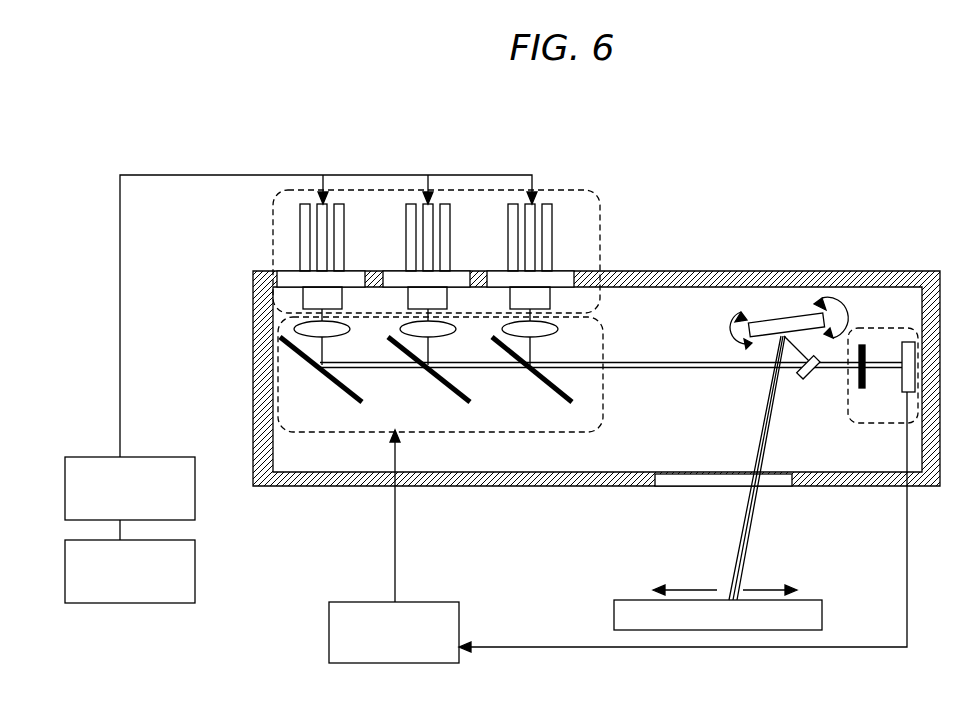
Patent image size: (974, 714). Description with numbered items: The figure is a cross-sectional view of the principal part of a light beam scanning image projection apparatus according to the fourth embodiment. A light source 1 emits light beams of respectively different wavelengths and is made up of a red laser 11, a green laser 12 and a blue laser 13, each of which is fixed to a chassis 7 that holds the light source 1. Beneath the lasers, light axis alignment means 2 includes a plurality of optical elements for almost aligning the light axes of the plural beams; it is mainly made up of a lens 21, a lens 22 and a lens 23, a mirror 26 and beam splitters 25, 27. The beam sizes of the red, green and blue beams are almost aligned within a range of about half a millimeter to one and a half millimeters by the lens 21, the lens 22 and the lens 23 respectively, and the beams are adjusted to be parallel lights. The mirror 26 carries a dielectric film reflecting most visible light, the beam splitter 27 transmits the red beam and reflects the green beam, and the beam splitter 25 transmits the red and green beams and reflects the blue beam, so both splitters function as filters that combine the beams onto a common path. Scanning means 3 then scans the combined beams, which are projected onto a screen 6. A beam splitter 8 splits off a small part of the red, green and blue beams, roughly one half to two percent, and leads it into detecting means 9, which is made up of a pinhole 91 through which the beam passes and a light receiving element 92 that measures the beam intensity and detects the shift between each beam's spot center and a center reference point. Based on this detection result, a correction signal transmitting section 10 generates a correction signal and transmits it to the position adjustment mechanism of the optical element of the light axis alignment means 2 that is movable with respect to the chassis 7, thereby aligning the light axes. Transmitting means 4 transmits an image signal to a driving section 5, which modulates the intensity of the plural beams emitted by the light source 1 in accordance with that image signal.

The light source 1 is at (594, 195).
The red laser 11 is at (302, 275).
The green laser 12 is at (403, 275).
The blue laser 13 is at (568, 273).
The light axis alignment means 2 is at (579, 433).
The lens 21 is at (329, 333).
The lens 22 is at (446, 324).
The lens 23 is at (597, 316).
The beam splitter 25 is at (524, 376).
The mirror 26 is at (323, 373).
The beam splitter 27 is at (429, 370).
The scanning means 3 is at (776, 310).
The transmitting means 4 is at (194, 588).
The driving section 5 is at (196, 517).
The screen 6 is at (630, 600).
The chassis 7 is at (866, 272).
The beam splitter 8 is at (802, 382).
The detecting means 9 is at (858, 424).
The pinhole 91 is at (861, 344).
The light receiving element 92 is at (907, 392).
The correction signal transmitting section 10 is at (437, 602).